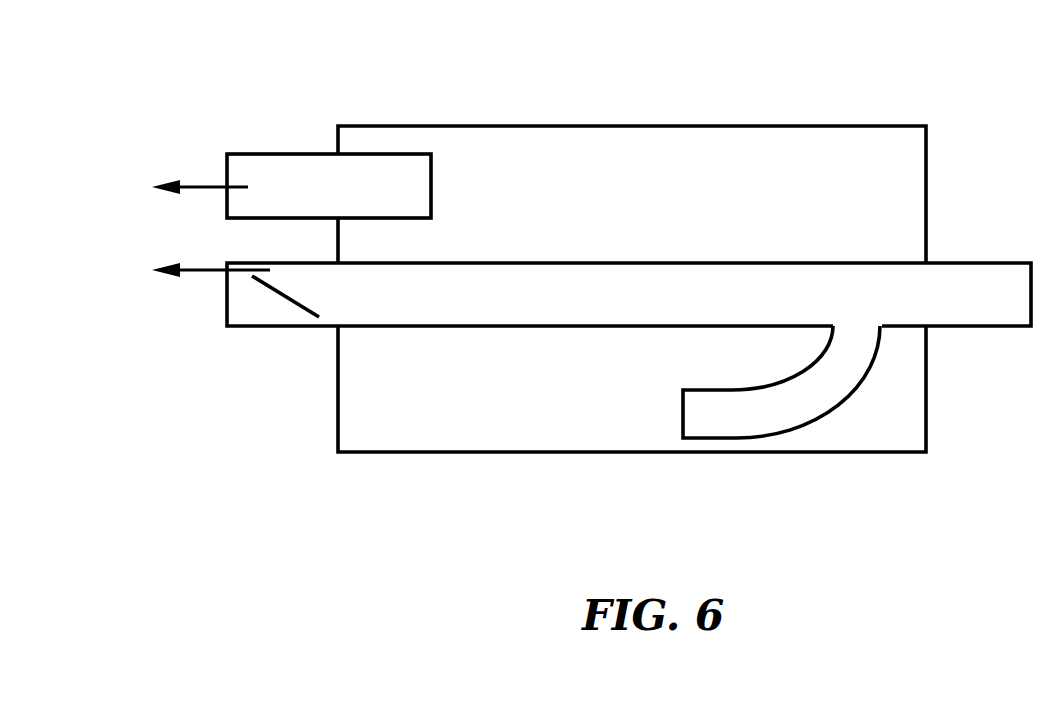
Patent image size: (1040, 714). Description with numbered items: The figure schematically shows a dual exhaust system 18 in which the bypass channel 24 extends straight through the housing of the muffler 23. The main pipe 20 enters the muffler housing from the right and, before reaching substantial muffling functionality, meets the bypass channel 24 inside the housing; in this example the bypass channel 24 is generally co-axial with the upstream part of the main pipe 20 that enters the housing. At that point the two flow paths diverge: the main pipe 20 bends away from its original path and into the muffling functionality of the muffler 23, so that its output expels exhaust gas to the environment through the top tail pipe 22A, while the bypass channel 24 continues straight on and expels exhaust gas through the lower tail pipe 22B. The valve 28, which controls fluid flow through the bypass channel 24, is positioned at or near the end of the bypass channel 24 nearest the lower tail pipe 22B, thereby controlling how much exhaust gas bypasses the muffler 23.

The exhaust system 18 is at (791, 83).
The main pipe 20 is at (959, 262).
The top tail pipe 22A is at (227, 173).
The lower tail pipe 22B is at (227, 297).
The muffler 23 is at (504, 126).
The bypass channel 24 is at (733, 262).
The control valve 28 is at (273, 326).